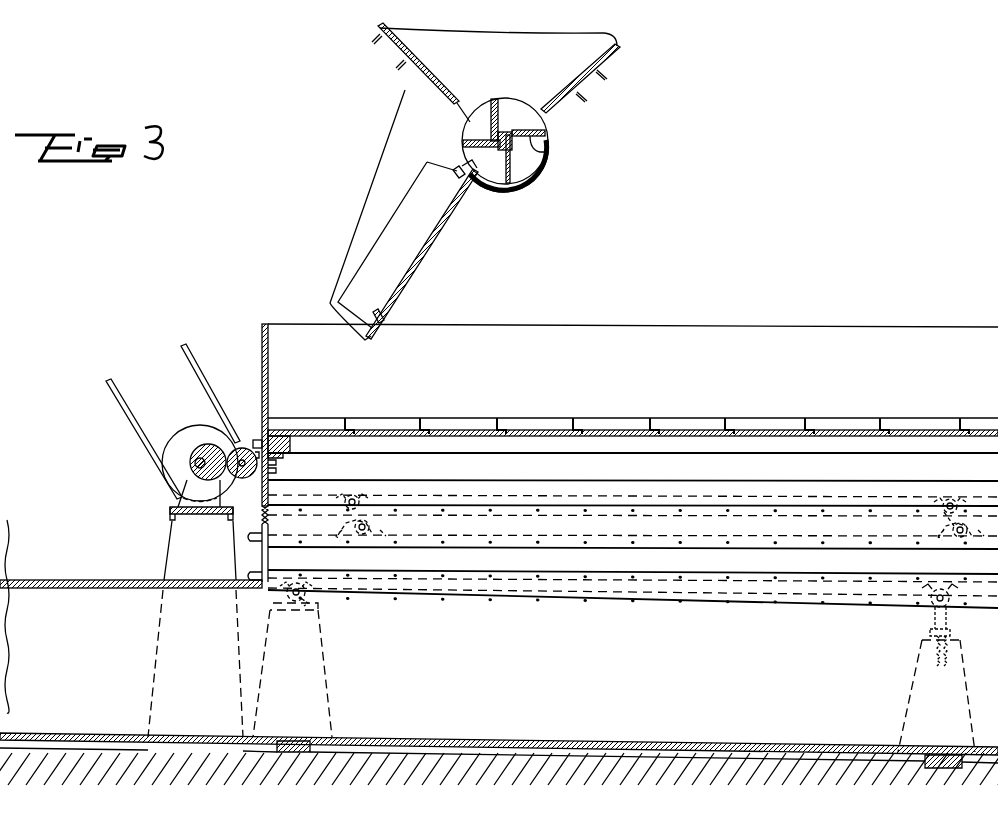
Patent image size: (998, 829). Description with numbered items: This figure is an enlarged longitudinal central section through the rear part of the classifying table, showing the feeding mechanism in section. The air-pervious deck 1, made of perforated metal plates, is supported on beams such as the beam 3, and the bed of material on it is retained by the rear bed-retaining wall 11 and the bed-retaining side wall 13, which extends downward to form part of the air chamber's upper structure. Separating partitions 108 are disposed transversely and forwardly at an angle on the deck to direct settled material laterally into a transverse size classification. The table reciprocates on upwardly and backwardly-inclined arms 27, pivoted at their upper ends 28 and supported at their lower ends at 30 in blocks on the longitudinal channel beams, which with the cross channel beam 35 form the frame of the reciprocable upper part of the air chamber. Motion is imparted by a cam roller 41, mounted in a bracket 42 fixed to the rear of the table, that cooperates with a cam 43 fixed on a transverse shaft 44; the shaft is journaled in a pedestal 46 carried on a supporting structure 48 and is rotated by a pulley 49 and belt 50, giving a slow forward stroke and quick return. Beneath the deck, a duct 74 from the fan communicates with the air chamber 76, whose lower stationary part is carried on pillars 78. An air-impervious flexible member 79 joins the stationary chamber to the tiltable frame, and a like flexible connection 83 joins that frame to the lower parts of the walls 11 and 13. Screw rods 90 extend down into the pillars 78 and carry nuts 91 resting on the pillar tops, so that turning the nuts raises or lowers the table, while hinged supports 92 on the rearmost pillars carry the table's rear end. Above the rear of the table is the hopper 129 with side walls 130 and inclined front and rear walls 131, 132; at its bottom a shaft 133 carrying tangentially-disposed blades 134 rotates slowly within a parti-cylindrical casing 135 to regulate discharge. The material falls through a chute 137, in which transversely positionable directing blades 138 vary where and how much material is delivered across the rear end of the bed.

The air-pervious deck 1 is at (672, 420).
The beam 3 is at (393, 432).
The rear bed-retaining wall 11 is at (270, 364).
The bed-retaining side wall 13 is at (616, 327).
The upwardly and backwardly-inclined arm 27 is at (352, 515).
The upper end of arm 28 is at (350, 498).
The lower pivotal support 30 is at (366, 540).
The cross channel beam 35 is at (258, 556).
The cam roller 41 is at (240, 448).
The bracket 42 is at (258, 438).
The cam 43 is at (206, 444).
The transversely-extending shaft 44 is at (196, 463).
The pedestal 46 is at (170, 480).
The supporting structure 48 is at (178, 538).
The pulley 49 is at (180, 430).
The belt 50 is at (204, 368).
The duct 74 is at (60, 588).
The air chamber 76 is at (499, 711).
The pillar 78 is at (328, 664).
The air-impervious flexible member 79 is at (736, 590).
The flexible connection 83 is at (718, 530).
The screw rod 90 is at (948, 626).
The nut 91 is at (930, 631).
The hinged support 92 is at (314, 600).
The separating partition 108 is at (572, 424).
The hopper 129 is at (619, 52).
The side wall of hopper 130 is at (540, 44).
The front wall of hopper 131 is at (408, 70).
The rear wall of hopper 132 is at (584, 106).
The shaft 133 is at (490, 168).
The tangentially-disposed blade 134 is at (546, 152).
The parti-cylindrical casing 135 is at (534, 176).
The chute 137 is at (427, 251).
The directing blade 138 is at (383, 232).